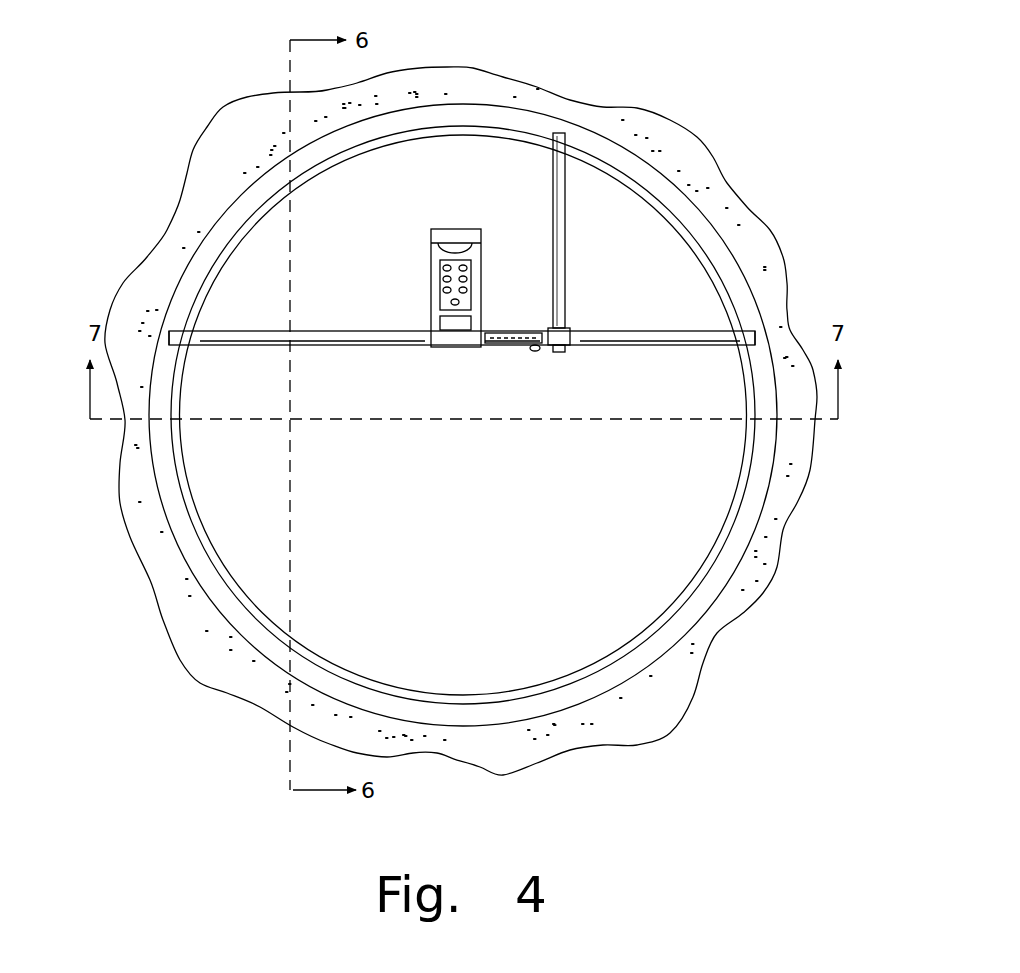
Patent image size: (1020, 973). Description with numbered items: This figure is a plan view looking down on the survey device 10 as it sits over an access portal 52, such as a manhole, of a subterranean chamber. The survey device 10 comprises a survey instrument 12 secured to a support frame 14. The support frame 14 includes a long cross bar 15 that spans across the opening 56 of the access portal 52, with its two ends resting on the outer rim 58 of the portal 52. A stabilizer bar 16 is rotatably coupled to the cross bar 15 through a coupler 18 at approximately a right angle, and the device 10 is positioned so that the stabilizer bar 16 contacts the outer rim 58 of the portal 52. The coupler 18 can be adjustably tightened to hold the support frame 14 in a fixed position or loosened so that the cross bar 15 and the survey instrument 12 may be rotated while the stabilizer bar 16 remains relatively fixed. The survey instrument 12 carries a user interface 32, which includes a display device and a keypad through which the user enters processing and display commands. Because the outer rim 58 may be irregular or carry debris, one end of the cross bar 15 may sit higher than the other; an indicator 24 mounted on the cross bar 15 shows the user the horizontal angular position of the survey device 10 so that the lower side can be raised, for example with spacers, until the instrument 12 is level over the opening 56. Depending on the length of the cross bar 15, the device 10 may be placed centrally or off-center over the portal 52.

The survey device 10 is at (462, 299).
The survey instrument 12 is at (412, 247).
The support frame 14 is at (316, 330).
The cross bar 15 is at (228, 336).
The stabilizer bar 16 is at (554, 183).
The coupler 18 is at (570, 346).
The indicator 24 is at (508, 346).
The user interface 32 is at (415, 267).
The access portal 52 is at (207, 221).
The opening 56 is at (607, 206).
The outer rim 58 is at (178, 541).